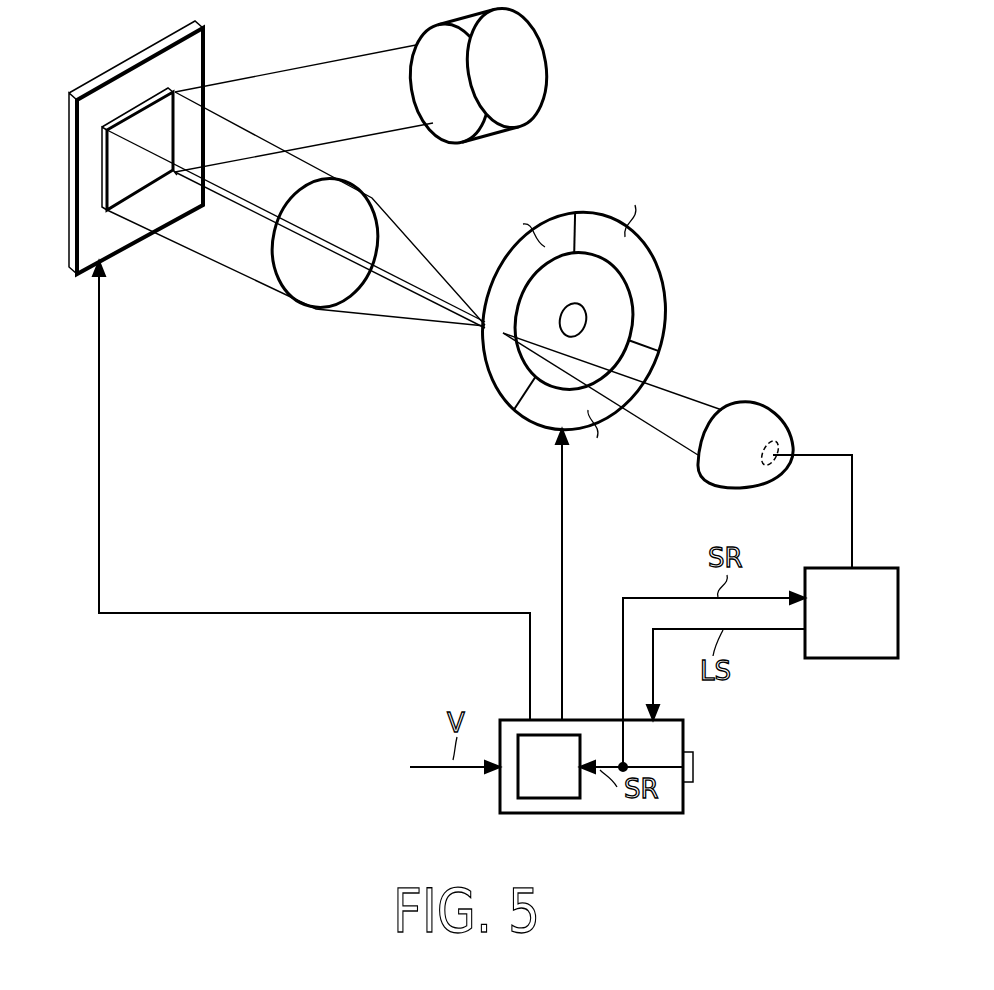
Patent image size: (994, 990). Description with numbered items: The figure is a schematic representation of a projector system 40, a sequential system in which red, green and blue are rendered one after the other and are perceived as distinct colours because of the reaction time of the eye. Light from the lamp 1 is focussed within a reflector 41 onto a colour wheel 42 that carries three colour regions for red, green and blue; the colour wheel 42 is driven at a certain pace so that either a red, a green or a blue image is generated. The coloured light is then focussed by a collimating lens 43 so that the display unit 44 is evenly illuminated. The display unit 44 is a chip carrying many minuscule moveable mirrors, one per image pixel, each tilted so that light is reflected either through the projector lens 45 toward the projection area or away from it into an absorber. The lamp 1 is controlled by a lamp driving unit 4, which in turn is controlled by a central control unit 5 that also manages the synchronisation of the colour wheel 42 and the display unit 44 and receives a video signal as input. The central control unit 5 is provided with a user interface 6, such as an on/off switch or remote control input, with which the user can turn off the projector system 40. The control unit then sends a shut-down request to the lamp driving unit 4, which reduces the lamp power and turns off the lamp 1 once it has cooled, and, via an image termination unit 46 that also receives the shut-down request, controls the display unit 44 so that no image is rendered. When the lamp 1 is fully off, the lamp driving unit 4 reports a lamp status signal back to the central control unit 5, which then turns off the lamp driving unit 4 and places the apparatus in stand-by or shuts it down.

The lamp 1 is at (792, 438).
The lamp driving unit 4 is at (860, 627).
The central control unit 5 is at (680, 802).
The user interface 6 is at (695, 760).
The projector system 40 is at (788, 119).
The reflector 41 is at (745, 412).
The colour wheel 42 is at (648, 293).
The collimating lens 43 is at (367, 217).
The display unit 44 is at (116, 173).
The projector lens 45 is at (536, 83).
The image termination unit 46 is at (564, 780).